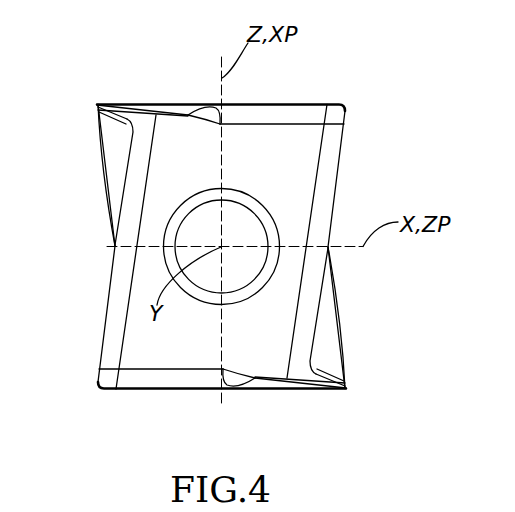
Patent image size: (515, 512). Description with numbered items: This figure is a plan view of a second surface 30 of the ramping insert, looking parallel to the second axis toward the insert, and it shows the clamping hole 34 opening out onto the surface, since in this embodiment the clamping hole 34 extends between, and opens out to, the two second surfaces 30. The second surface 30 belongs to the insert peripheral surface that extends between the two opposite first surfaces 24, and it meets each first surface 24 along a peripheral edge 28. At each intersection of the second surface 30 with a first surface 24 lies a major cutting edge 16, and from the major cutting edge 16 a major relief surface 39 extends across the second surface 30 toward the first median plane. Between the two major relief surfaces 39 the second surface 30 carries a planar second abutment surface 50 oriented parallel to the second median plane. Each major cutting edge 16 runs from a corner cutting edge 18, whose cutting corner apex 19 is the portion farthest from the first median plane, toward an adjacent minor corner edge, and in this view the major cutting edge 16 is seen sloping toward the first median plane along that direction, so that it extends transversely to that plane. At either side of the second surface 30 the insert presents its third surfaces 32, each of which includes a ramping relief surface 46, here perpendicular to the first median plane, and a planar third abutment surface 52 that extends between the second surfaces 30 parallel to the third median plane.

The major cutting edge 16 is at (107, 300).
The corner cutting edge 18 is at (95, 108).
The cutting corner apex 19 is at (96, 104).
The first surface 24 is at (118, 155).
The peripheral edge 28 is at (345, 168).
The second surface 30 is at (291, 131).
The third surface 32 is at (274, 96).
The clamping hole 34 is at (246, 228).
The major relief surface 39 is at (334, 137).
The ramping relief surface 46 is at (122, 108).
The second abutment surface 50 is at (143, 357).
The third abutment surface 52 is at (238, 103).